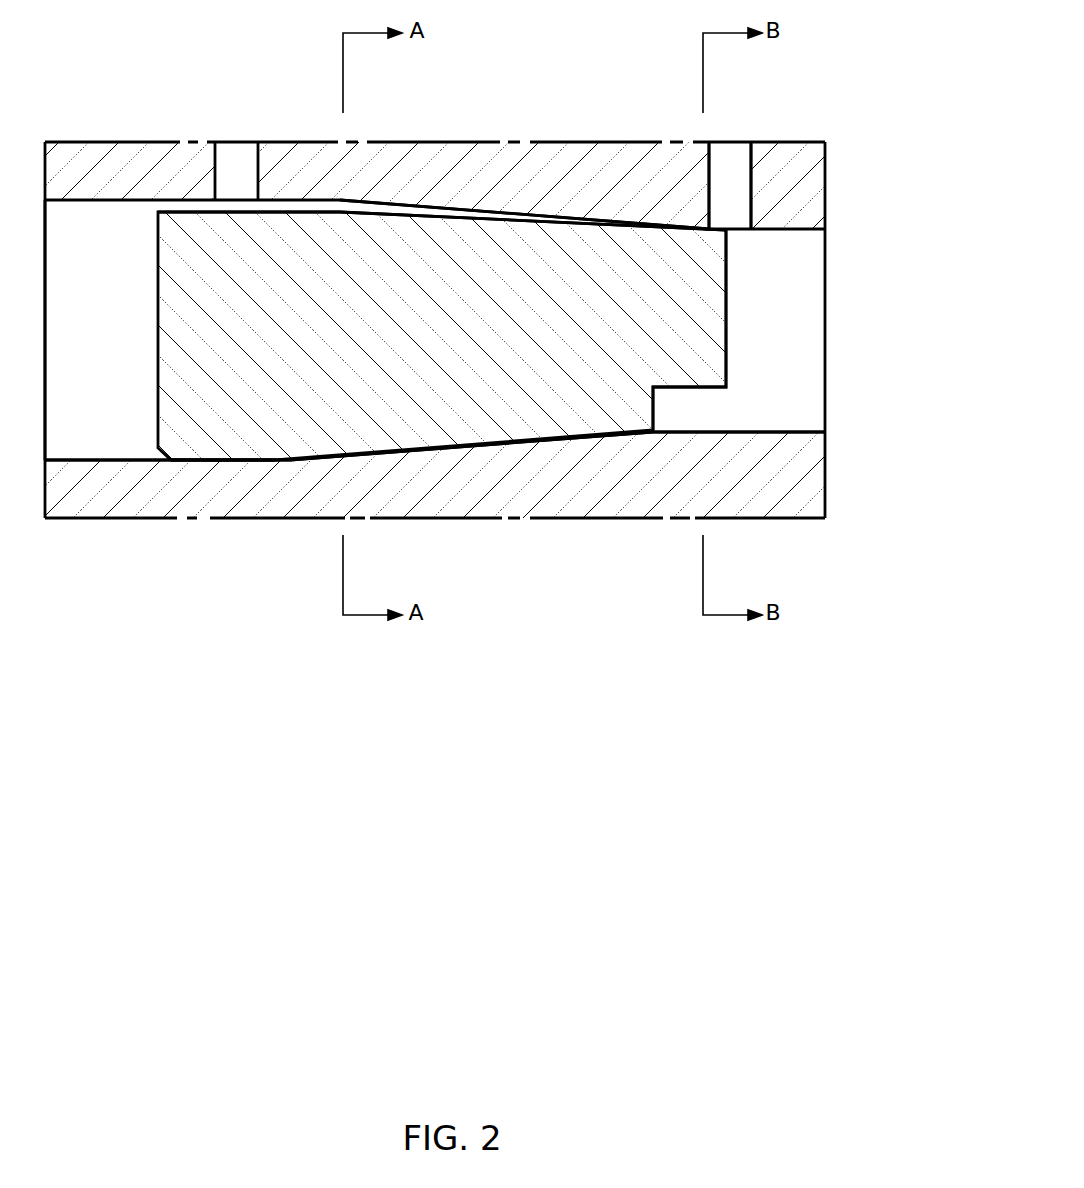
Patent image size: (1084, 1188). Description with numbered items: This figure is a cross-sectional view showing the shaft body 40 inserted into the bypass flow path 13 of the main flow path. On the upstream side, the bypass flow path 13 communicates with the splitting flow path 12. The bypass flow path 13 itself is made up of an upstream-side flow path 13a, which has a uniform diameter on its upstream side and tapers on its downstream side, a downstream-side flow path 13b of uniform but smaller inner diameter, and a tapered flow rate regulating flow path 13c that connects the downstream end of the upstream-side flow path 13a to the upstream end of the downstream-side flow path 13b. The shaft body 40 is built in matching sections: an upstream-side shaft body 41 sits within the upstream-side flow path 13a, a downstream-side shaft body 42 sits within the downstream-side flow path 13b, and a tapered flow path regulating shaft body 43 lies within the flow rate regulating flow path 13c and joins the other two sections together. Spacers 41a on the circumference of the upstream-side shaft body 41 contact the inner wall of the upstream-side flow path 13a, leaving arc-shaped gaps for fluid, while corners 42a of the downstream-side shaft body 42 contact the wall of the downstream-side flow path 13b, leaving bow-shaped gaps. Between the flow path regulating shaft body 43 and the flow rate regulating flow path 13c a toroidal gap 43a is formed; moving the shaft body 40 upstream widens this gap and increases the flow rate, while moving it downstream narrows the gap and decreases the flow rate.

The splitting flow path 12 is at (84, 365).
The bypass flow path 13 is at (826, 330).
The upstream-side flow path 13a is at (283, 460).
The downstream-side flow path 13b is at (767, 433).
The flow rate regulating flow path 13c is at (530, 446).
The shaft body 40 is at (234, 210).
The upstream-side shaft body 41 is at (308, 220).
The spacer 41a is at (308, 456).
The downstream-side shaft body 42 is at (707, 355).
The corner 42a is at (721, 228).
The flow path regulating shaft body 43 is at (562, 250).
The toroidal gap 43a is at (519, 216).